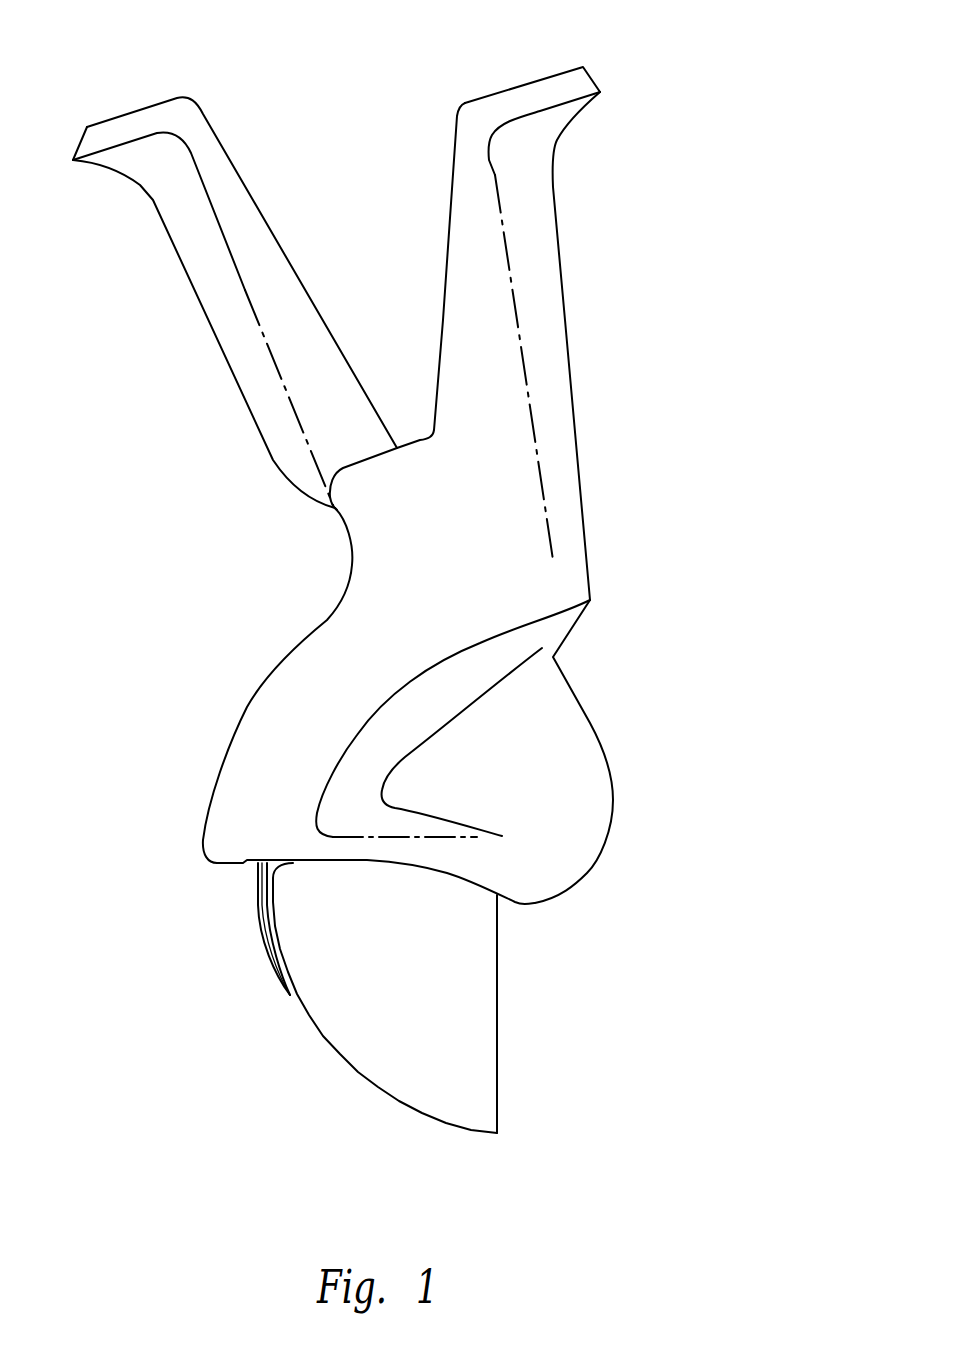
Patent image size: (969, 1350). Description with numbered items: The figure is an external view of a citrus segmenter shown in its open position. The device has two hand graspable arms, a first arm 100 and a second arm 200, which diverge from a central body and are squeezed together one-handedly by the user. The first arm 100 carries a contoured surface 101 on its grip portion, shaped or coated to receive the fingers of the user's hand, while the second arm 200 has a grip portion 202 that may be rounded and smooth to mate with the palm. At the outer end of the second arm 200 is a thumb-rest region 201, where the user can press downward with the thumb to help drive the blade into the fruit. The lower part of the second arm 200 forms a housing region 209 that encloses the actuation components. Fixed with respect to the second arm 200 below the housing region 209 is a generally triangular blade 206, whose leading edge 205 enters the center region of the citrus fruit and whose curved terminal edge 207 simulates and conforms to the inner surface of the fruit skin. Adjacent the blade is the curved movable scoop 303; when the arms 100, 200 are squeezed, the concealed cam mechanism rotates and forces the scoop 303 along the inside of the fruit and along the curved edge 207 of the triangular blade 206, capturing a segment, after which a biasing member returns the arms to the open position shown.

The first arm 100 is at (227, 273).
The contoured surface 101 is at (183, 267).
The second arm 200 is at (504, 304).
The thumb-rest region 201 is at (597, 80).
The grip portion 202 is at (557, 243).
The housing region 209 is at (613, 800).
The curved movable scoop 303 is at (267, 947).
The leading edge 205 is at (497, 1013).
The triangular blade 206 is at (436, 1004).
The curved terminal edge 207 is at (352, 1063).